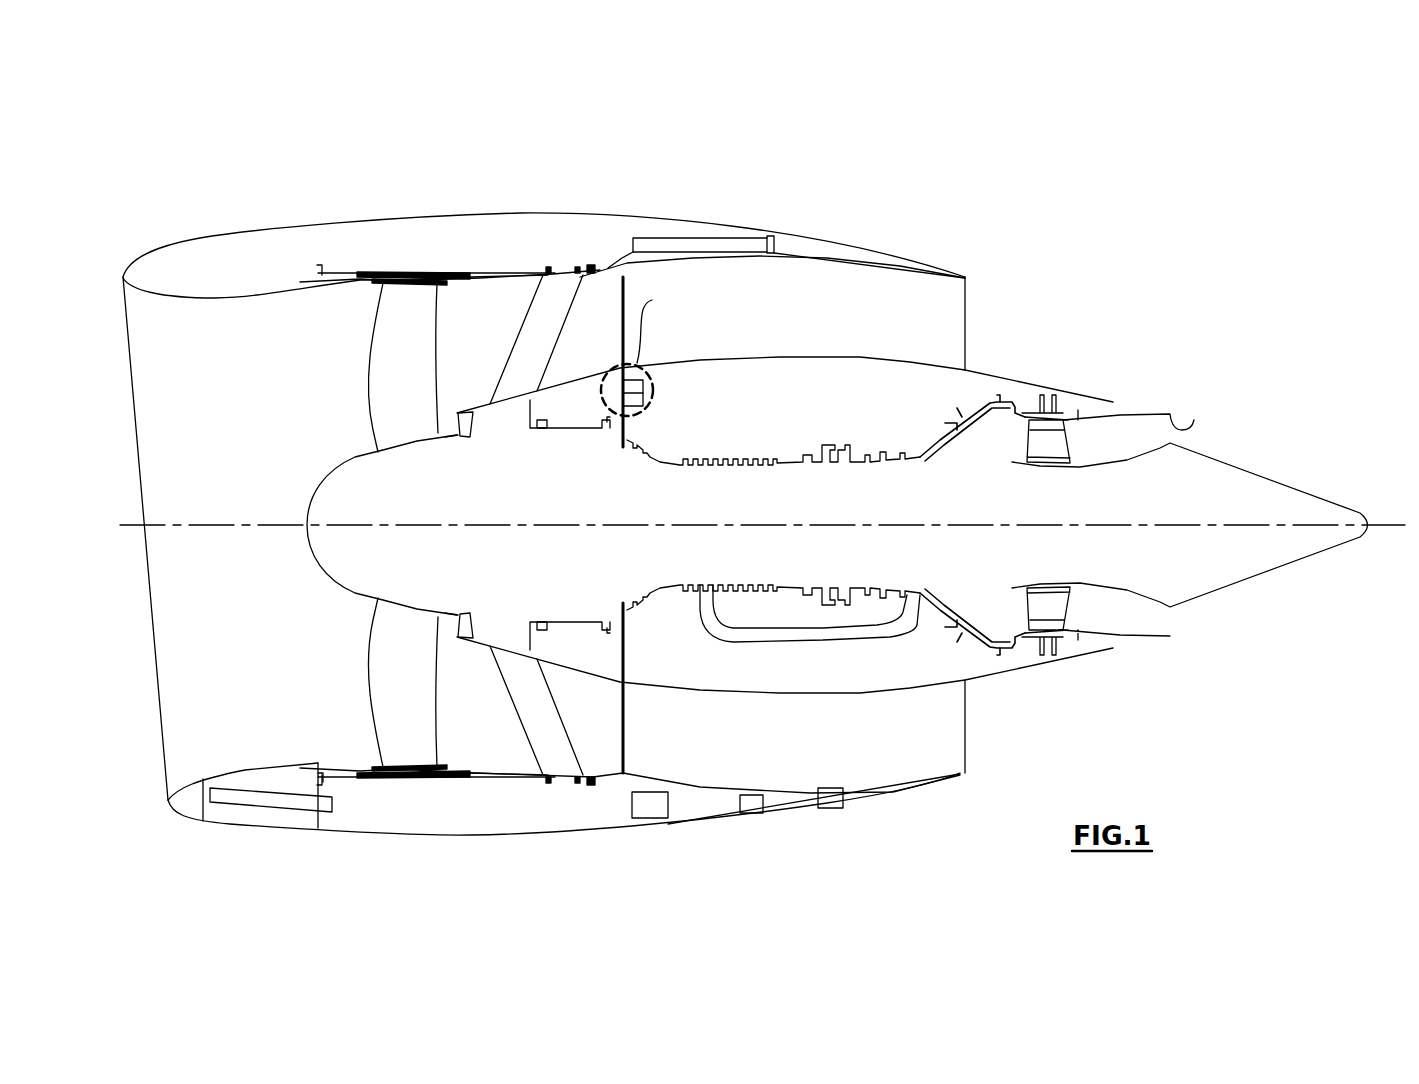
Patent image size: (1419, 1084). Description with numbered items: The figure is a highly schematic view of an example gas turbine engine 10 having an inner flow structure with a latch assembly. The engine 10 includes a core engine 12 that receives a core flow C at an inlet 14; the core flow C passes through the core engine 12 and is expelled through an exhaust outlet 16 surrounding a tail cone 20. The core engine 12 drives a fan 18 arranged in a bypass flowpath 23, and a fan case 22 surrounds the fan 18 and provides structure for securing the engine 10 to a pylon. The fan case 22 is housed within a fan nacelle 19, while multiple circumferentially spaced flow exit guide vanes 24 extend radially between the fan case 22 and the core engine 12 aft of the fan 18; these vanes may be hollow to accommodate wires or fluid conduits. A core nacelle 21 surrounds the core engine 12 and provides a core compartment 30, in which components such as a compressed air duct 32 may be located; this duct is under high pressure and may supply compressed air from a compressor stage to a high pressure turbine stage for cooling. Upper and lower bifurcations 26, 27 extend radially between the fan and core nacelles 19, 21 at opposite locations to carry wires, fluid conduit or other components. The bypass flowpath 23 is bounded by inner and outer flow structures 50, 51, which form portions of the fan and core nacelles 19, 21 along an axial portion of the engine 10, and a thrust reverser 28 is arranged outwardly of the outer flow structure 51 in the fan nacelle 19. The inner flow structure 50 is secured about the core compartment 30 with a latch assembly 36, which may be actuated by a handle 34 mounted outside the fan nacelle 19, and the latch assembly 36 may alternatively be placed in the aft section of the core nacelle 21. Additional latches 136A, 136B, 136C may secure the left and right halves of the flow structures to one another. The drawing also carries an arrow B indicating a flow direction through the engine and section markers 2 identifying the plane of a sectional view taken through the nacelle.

The gas turbine engine 10 is at (843, 167).
The core engine 12 is at (806, 456).
The inlet 14 is at (457, 412).
The exhaust outlet 16 is at (1194, 422).
The fan 18 is at (378, 657).
The fan nacelle 19 is at (290, 212).
The tail cone 20 is at (1280, 557).
The core nacelle 21 is at (910, 355).
The fan case 22 is at (462, 772).
The bypass flowpath 23 is at (777, 344).
The flow exit guide vanes 24 is at (530, 700).
The upper bifurcation 26 is at (887, 327).
The lower bifurcation 27 is at (857, 750).
The thrust reverser 28 is at (693, 236).
The core compartment 30 is at (857, 668).
The compressed air duct 32 is at (920, 637).
The handle 34 is at (282, 802).
The latch assembly 36 is at (649, 412).
The inner flow structure 50 is at (702, 685).
The outer flow structure 51 is at (713, 782).
The latch 136A is at (673, 822).
The latch 136B is at (753, 817).
The latch 136C is at (843, 810).
The bypass flow direction B is at (333, 335).
The core flow C is at (443, 423).
The section line 2- 2 is at (668, 207).